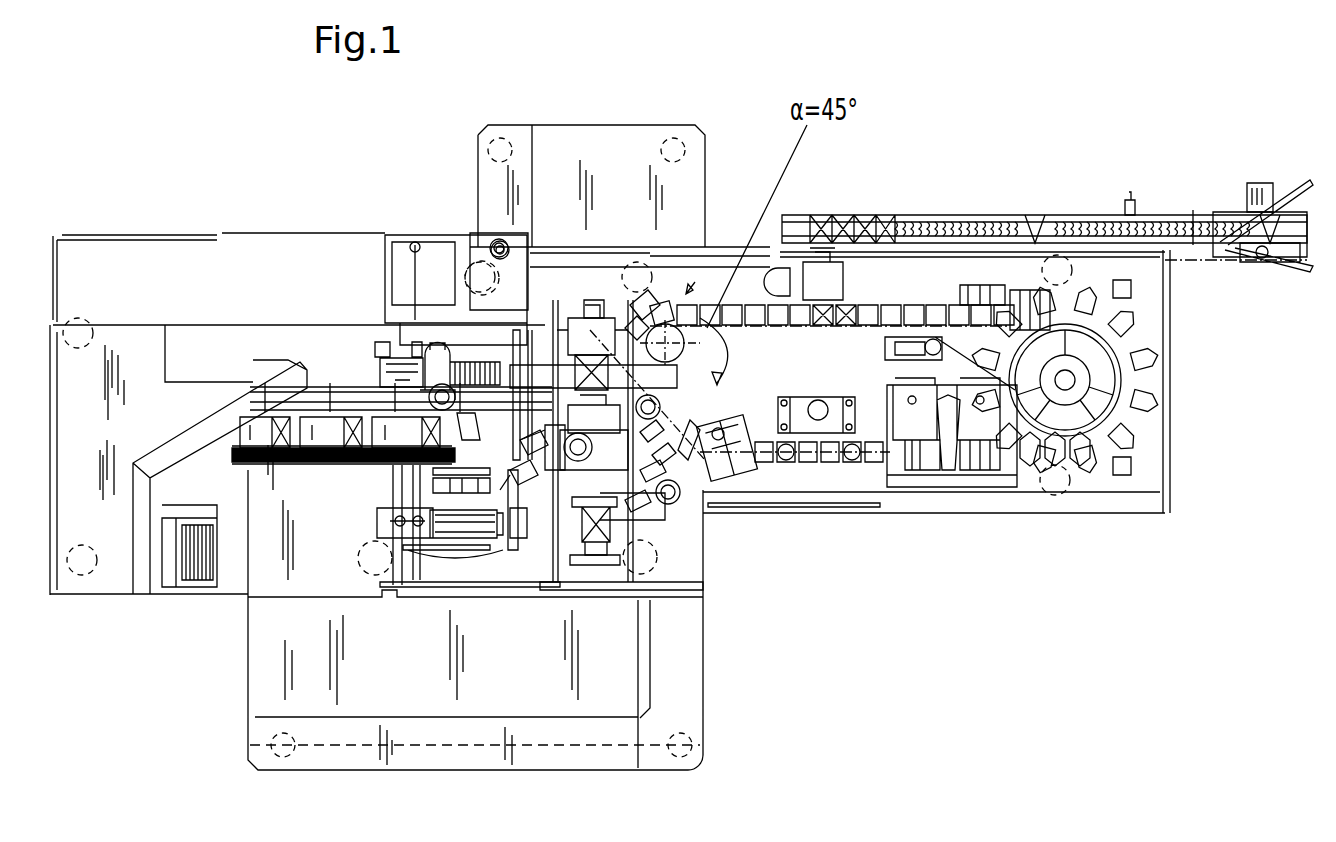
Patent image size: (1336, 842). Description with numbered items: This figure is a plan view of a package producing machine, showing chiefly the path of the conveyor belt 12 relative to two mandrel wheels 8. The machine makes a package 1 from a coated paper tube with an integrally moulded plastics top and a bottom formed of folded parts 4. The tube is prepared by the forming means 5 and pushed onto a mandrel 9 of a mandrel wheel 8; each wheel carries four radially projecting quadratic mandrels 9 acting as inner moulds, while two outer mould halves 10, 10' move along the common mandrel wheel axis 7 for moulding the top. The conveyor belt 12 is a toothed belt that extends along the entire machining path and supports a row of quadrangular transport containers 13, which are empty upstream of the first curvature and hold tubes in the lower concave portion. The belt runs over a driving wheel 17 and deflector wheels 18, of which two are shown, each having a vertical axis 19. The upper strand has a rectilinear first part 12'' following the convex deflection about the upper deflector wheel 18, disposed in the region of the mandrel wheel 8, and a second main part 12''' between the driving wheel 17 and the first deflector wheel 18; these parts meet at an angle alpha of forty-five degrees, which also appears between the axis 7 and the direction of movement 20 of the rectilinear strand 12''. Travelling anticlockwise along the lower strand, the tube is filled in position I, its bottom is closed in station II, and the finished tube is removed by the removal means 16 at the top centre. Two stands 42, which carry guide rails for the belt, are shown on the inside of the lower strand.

The package 1 is at (850, 302).
The folded parts 4 is at (1080, 312).
The means for forming the tube 5 is at (462, 345).
The mandrel wheel axis 7 is at (588, 300).
The mandrel wheel 8 is at (652, 322).
The mandrel 9 is at (590, 352).
The outer mould half 10 is at (669, 621).
The outer mould half 10' is at (566, 673).
The conveyor belt 12 is at (832, 334).
The first part of the upper strand 12'' is at (701, 571).
The second part of the upper strand 12''' is at (980, 226).
The transport container 13 is at (548, 418).
The means for removing finished tubes 16 is at (832, 325).
The driving wheel 17 is at (1108, 366).
The deflector wheel 18 is at (663, 340).
The vertical axis 19 is at (647, 360).
The direction of movement 20 is at (606, 303).
The stand 42 is at (745, 445).
The filling position I is at (830, 395).
The bottom-closing station II is at (922, 483).